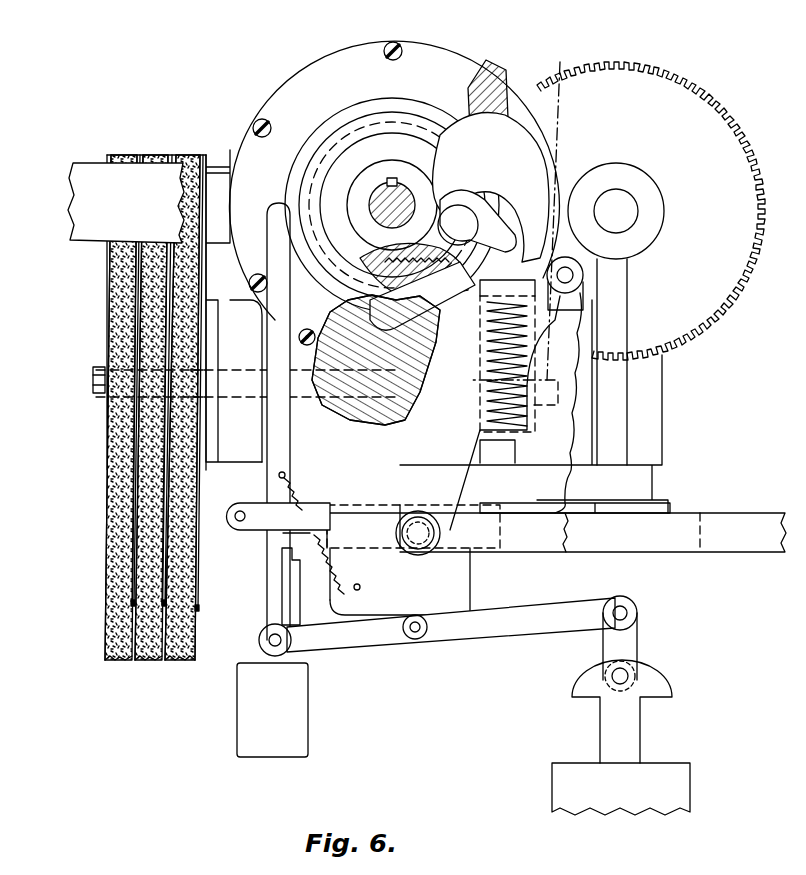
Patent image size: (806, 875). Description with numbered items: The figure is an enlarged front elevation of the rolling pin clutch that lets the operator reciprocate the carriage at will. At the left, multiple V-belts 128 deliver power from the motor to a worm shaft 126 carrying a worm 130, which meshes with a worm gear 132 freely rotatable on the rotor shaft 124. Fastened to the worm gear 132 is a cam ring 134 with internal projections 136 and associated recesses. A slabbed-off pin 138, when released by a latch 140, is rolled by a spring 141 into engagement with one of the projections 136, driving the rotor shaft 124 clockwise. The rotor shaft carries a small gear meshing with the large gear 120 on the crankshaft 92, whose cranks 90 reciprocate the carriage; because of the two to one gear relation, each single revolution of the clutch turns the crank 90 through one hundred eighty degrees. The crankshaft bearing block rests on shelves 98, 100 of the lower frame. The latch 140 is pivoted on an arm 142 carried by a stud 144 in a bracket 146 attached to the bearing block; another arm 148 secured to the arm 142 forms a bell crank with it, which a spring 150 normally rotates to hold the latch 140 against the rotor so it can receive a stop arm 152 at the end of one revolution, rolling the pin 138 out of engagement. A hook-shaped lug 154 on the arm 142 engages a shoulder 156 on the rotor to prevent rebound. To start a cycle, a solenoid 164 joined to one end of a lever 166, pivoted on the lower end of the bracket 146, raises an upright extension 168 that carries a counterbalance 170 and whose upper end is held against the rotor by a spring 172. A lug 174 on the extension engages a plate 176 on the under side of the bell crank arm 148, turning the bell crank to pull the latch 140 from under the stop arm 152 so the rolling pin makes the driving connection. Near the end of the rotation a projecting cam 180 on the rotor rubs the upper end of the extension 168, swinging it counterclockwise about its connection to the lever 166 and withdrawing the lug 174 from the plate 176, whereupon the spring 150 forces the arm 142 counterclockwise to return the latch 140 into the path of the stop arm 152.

The crank 90 is at (572, 170).
The crankshaft 92 is at (624, 211).
The shelf 98 is at (738, 552).
The shelf 100 is at (86, 172).
The large gear 120 is at (670, 82).
The rotor shaft 124 is at (378, 208).
The worm shaft 126 is at (96, 382).
The V-belts 128 is at (152, 662).
The worm 130 is at (372, 408).
The worm gear 132 is at (490, 92).
The cam ring 134 is at (470, 172).
The internal projections 136 is at (485, 205).
The slabbed-off pin 138 is at (372, 258).
The latch 140 is at (492, 262).
The spring 141 is at (330, 300).
The arm 142 is at (450, 468).
The stud 144 is at (458, 564).
The bracket 146 is at (458, 591).
The arm 148 is at (330, 505).
The spring 150 is at (442, 533).
The stop arm 152 is at (486, 221).
The hook-shaped lug 154 is at (482, 282).
The shoulder 156 is at (440, 298).
The solenoid 164 is at (690, 792).
The lever 166 is at (345, 640).
The upright extension 168 is at (272, 462).
The counterbalance 170 is at (246, 722).
The spring 172 is at (330, 556).
The lug 174 is at (290, 560).
The plate 176 is at (292, 537).
The projecting cam 180 is at (320, 112).